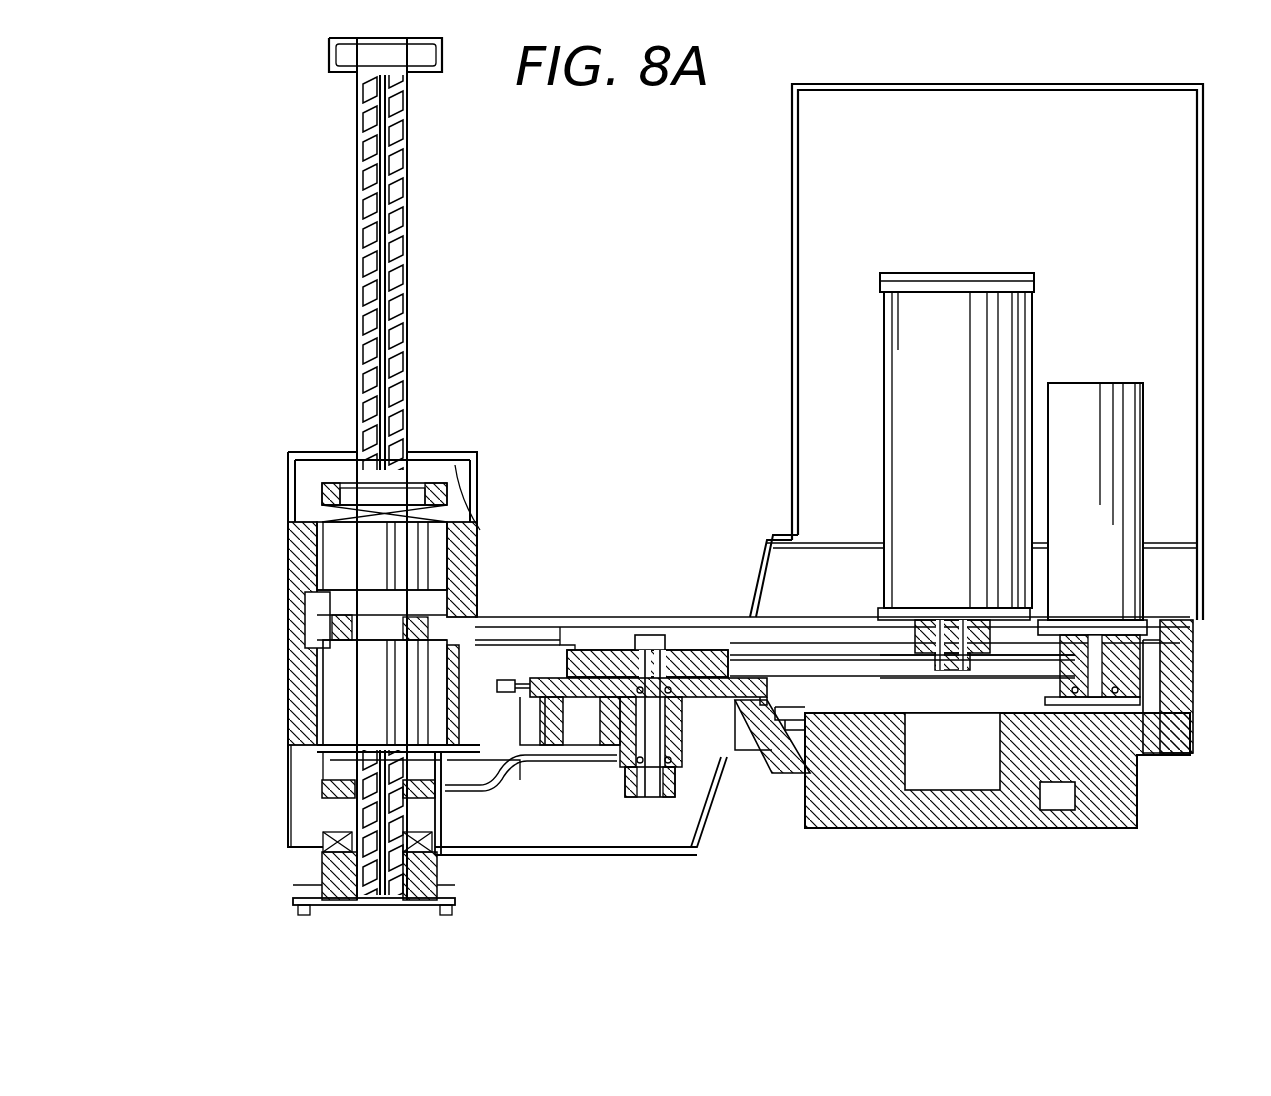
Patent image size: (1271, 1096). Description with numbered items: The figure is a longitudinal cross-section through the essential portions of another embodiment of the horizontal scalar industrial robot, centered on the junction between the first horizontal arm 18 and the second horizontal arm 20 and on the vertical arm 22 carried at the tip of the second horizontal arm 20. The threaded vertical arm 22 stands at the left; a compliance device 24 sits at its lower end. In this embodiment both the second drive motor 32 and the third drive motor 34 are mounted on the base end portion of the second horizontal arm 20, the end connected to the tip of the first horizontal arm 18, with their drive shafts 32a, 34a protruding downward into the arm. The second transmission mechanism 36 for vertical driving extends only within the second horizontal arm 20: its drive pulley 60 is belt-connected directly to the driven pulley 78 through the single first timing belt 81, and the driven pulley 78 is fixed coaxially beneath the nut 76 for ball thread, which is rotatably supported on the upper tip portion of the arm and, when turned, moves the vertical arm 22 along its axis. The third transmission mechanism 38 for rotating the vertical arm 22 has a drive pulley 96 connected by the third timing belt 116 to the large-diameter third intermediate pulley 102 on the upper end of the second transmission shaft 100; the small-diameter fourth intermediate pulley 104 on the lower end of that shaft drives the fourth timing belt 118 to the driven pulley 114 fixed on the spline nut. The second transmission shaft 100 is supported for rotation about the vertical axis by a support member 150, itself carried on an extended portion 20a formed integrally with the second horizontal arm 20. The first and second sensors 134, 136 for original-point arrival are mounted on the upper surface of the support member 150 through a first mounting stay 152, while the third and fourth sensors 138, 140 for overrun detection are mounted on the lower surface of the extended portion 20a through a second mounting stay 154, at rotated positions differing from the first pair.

The first horizontal arm 18 is at (1152, 809).
The second horizontal arm 20 is at (559, 596).
The extended portion 20a is at (476, 722).
The vertical arm 22 is at (407, 240).
The compliance device 24 is at (440, 890).
The second drive motor 32 is at (1015, 350).
The drive shaft 32a is at (940, 635).
The third drive motor 34 is at (1135, 453).
The drive shaft of third drive motor 34a is at (1093, 612).
The second transmission mechanism 36 is at (697, 617).
The third transmission mechanism 38 is at (699, 780).
The drive pulley 60 is at (980, 673).
The nut for ball thread 76 is at (325, 548).
The driven pulley 78 is at (310, 633).
The first timing belt 81 is at (503, 617).
The drive pulley 96 is at (1195, 707).
The second transmission shaft 100 is at (663, 800).
The third intermediate pulley 102 is at (713, 648).
The fourth intermediate pulley 104 is at (697, 800).
The driven pulley 114 is at (325, 800).
The third timing belt 116 is at (848, 675).
The fourth timing belt 118 is at (577, 785).
The first sensor 134 is at (623, 648).
The second sensor 136 is at (470, 790).
The third sensor 138 is at (647, 616).
The fourth sensor 140 is at (566, 884).
The support member 150 is at (592, 745).
The first mounting stay 152 is at (545, 658).
The second mounting stay 154 is at (518, 790).